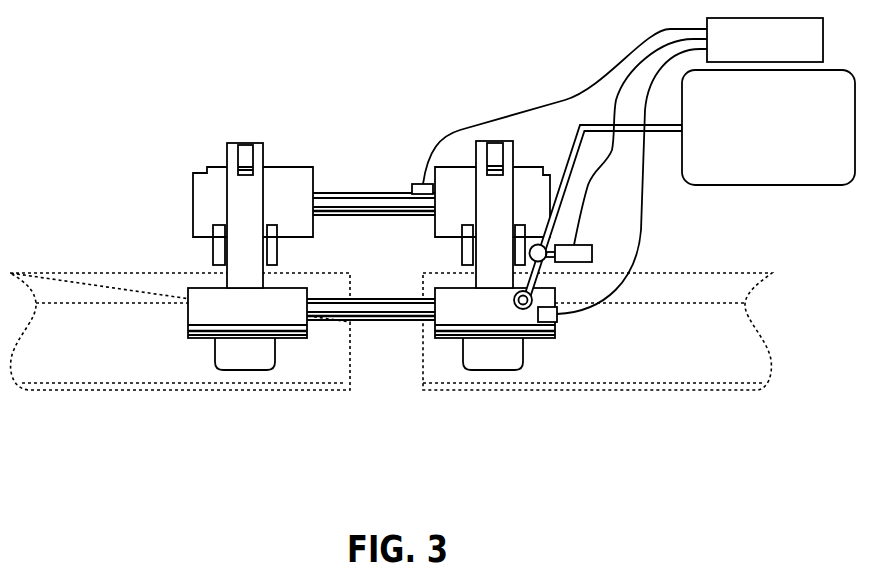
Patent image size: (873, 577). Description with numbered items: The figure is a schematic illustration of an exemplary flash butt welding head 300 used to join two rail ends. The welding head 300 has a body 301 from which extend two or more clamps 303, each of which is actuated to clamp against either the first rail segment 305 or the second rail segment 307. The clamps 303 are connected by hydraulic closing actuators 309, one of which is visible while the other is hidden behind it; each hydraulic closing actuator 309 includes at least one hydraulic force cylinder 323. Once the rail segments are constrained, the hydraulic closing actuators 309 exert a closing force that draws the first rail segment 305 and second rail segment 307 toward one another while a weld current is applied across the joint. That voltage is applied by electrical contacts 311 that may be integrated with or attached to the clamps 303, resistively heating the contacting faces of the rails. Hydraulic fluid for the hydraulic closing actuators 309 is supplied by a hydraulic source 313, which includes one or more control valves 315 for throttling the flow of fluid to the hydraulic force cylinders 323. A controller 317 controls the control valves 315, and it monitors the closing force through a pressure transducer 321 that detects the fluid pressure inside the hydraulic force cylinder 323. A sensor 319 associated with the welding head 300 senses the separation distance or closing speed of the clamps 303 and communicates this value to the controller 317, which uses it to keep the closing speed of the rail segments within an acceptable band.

The welding head 300 is at (160, 138).
The body 301 is at (286, 185).
The clamps 303 is at (253, 190).
The first rail segment 305 is at (118, 288).
The second rail segment 307 is at (632, 297).
The hydraulic closing actuator 309 is at (390, 320).
The electrical contacts 311 is at (223, 353).
The hydraulic source 313 is at (746, 141).
The control valve 315 is at (578, 253).
The controller 317 is at (743, 53).
The sensor 319 is at (417, 193).
The pressure transducer 321 is at (558, 320).
The hydraulic force cylinder 323 is at (497, 312).